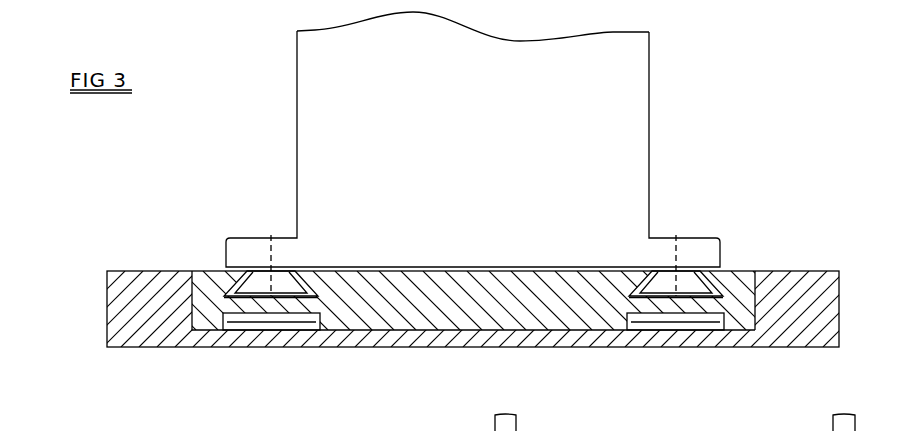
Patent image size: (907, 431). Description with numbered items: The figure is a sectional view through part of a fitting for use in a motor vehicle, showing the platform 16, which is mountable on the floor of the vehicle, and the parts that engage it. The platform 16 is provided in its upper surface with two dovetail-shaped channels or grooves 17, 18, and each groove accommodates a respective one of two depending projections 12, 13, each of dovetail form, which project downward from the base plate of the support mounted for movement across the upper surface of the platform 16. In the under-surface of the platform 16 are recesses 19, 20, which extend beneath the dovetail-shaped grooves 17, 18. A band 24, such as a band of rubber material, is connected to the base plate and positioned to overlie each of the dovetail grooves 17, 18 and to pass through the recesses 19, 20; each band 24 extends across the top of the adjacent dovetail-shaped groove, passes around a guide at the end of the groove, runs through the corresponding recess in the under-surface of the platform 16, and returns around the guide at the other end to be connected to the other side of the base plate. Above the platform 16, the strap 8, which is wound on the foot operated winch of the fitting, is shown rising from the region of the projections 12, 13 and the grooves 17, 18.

The strap 8 is at (580, 258).
The depending projection 12 is at (265, 288).
The depending projection 13 is at (685, 285).
The platform 16 is at (368, 307).
The dovetail-shaped groove 17 is at (224, 295).
The dovetail-shaped groove 18 is at (727, 290).
The recess 19 is at (260, 323).
The recess 20 is at (667, 326).
The band 24 is at (240, 322).